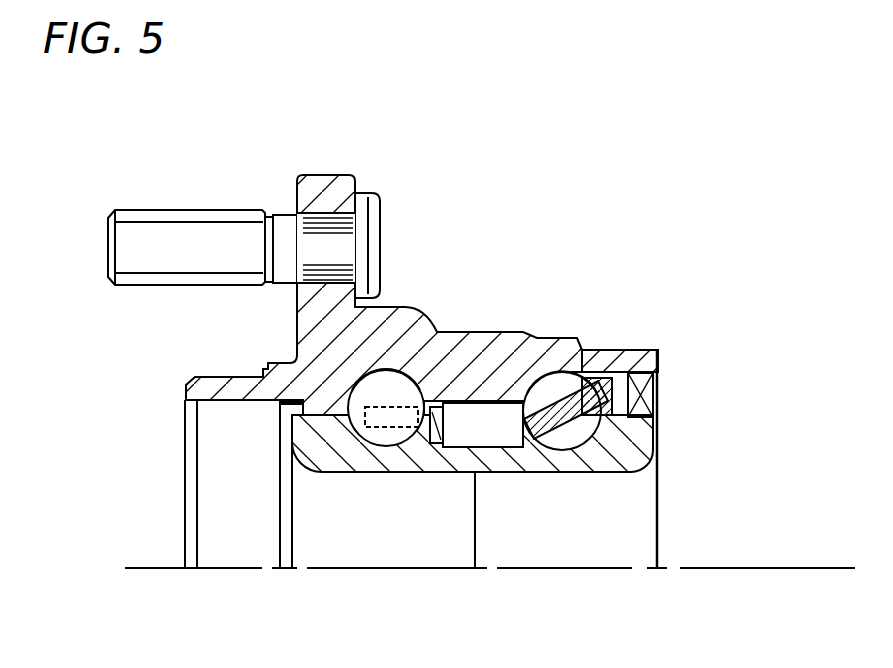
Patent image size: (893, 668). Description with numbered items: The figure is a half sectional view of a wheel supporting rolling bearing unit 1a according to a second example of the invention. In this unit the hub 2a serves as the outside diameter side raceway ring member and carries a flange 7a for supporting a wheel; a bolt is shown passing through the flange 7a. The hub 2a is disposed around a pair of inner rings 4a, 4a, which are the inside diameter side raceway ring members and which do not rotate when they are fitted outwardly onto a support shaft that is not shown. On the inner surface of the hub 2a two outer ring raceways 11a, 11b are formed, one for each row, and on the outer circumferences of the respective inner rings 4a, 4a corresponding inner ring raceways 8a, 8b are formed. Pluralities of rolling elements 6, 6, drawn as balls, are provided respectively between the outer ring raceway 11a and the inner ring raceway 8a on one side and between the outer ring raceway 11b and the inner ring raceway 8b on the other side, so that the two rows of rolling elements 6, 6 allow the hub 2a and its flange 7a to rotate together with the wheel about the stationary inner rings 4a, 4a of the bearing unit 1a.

The wheel supporting rolling bearing unit 1a is at (639, 348).
The hub 2a is at (478, 352).
The inner ring 4a is at (328, 458).
The rolling element 6 is at (388, 392).
The flange 7a is at (312, 192).
The inner ring raceway 8a is at (382, 440).
The inner ring raceway 8b is at (578, 440).
The outer ring raceway 11a is at (388, 384).
The outer ring raceway 11b is at (556, 388).